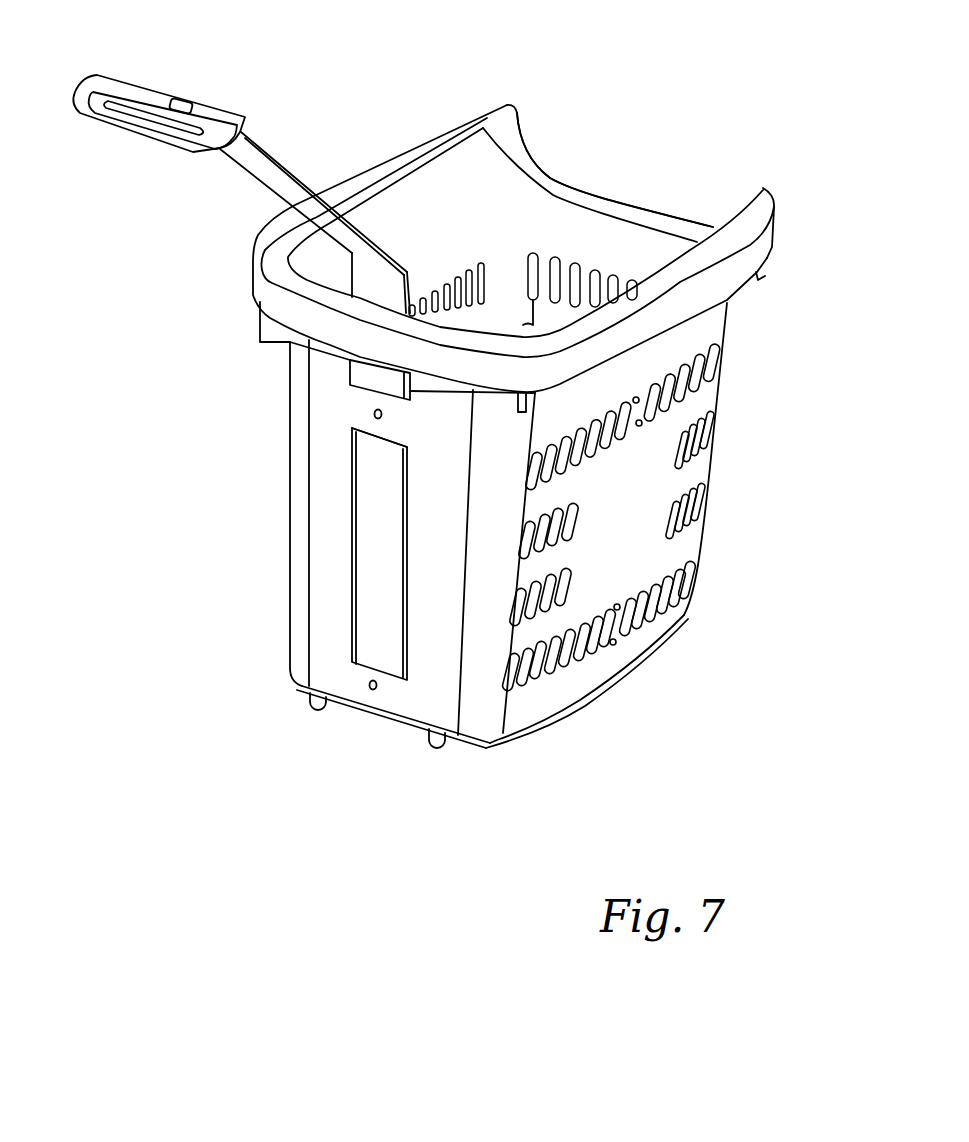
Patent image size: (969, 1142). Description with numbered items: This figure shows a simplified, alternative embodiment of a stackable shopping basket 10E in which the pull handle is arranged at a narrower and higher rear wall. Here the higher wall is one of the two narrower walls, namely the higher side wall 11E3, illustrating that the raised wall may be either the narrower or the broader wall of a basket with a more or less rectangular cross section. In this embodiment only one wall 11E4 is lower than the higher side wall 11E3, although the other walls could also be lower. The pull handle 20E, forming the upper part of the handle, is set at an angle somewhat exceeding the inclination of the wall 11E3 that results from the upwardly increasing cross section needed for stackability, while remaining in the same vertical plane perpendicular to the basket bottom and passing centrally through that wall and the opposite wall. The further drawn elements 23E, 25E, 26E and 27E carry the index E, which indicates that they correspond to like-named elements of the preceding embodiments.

The stackable shopping basket 10E is at (585, 439).
The higher side wall 11E3 is at (440, 598).
The lower wall 11E4 is at (635, 213).
The pull handle 20E is at (222, 222).
The aperture 23E is at (362, 410).
The handle grip 25E is at (110, 123).
The button / wheel foot 26E is at (187, 100).
The pivot hole 27E is at (353, 428).